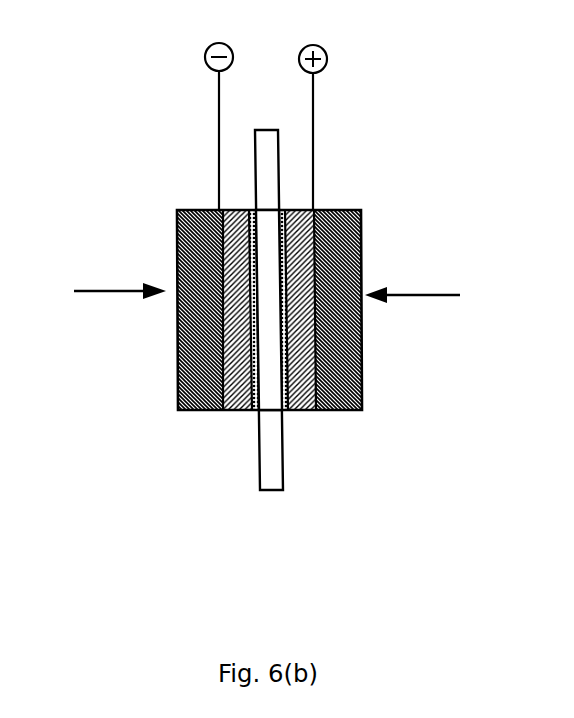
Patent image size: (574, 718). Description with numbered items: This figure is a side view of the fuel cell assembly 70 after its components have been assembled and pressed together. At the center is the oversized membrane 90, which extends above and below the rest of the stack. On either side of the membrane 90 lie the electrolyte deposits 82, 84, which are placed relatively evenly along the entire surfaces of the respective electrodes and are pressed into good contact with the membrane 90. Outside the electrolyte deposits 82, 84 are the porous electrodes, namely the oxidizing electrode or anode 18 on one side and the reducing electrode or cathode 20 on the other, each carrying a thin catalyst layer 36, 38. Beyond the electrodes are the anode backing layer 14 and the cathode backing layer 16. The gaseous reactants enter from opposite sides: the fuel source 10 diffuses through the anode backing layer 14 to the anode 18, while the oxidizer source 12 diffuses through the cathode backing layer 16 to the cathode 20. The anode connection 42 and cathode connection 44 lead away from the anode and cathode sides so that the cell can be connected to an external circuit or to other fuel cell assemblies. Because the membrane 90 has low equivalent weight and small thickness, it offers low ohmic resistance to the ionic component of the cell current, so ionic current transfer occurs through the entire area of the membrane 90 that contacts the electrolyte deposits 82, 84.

The fuel cell assembly 70 is at (86, 93).
The anode connection 42 is at (219, 101).
The cathode connection 44 is at (318, 107).
The electrolyte deposit 82 is at (249, 245).
The electrolyte deposit 84 is at (290, 248).
The fuel source 10 is at (124, 287).
The oxidizer source 12 is at (414, 285).
The thin catalyst layer 36 is at (250, 330).
The thin catalyst layer 38 is at (290, 330).
The anode backing layer 14 is at (178, 346).
The cathode backing layer 16 is at (361, 344).
The anode 18 is at (240, 412).
The cathode 20 is at (300, 412).
The membrane 90 is at (273, 508).